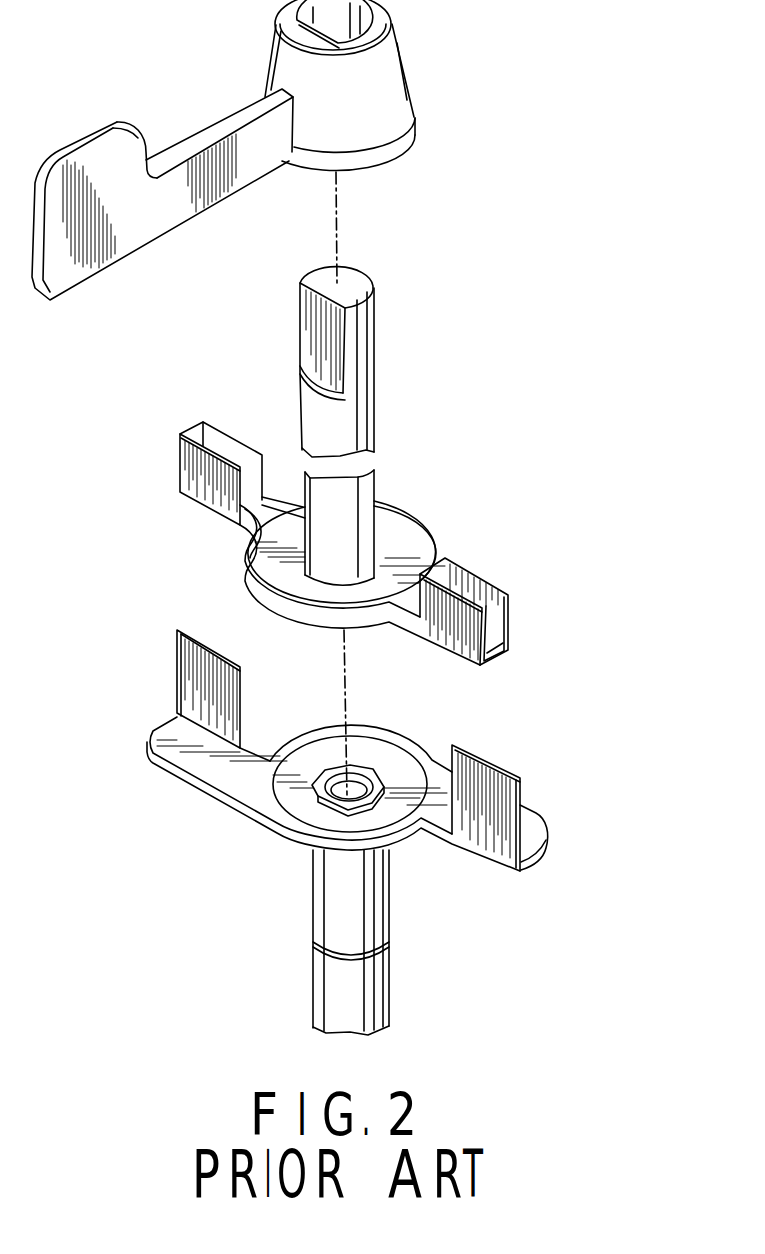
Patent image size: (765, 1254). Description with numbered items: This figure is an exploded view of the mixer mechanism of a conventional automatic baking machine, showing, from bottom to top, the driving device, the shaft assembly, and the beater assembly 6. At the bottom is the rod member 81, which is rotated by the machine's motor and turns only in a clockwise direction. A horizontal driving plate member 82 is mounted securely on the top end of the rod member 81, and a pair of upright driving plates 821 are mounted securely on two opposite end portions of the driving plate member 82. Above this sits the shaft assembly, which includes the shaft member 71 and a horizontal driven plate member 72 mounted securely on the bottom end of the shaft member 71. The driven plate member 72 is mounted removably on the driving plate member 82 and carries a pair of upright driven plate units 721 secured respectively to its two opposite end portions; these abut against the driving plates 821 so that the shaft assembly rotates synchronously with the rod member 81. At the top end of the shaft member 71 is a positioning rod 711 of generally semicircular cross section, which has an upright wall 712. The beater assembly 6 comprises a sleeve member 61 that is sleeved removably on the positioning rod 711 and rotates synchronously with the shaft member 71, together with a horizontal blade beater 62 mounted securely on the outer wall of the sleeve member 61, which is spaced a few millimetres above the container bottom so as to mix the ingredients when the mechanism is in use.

The beater assembly 6 is at (404, 86).
The sleeve member 61 is at (398, 44).
The horizontal blade beater 62 is at (127, 230).
The shaft member 71 is at (300, 406).
The positioning rod 711 is at (375, 313).
The upright wall 712 is at (307, 332).
The horizontal driven plate member 72 is at (418, 512).
The upright driven plate units 721 is at (477, 573).
The rod member 81 is at (390, 920).
The horizontal driving plate member 82 is at (407, 728).
The upright driving plates 821 is at (488, 760).